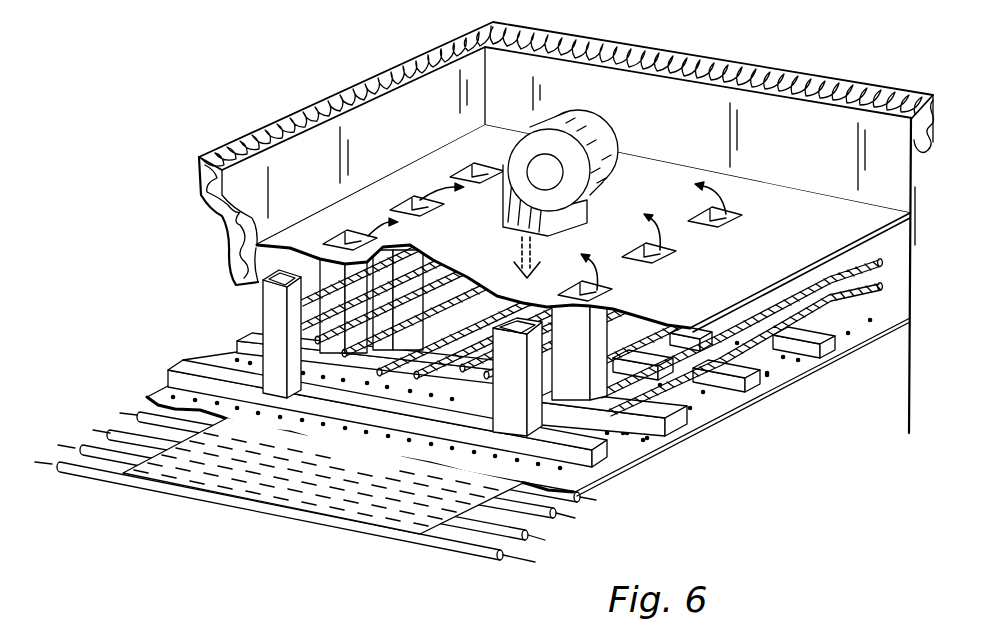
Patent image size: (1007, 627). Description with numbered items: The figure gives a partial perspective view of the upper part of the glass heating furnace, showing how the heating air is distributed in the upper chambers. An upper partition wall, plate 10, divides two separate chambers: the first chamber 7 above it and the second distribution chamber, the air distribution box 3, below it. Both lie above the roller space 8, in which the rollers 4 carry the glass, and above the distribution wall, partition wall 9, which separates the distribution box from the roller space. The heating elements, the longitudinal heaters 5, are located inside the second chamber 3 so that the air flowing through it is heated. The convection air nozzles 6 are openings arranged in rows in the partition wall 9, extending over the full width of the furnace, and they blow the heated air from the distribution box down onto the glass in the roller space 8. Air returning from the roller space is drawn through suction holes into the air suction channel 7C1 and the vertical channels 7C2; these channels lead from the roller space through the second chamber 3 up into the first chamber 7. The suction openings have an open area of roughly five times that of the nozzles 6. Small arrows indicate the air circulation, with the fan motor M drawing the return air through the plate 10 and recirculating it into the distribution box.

The air distribution box 3 is at (885, 318).
The rollers 4 is at (487, 557).
The longitudinal heaters 5 is at (767, 350).
The convection air nozzles 6 is at (233, 468).
The first chamber 7 is at (387, 137).
The air suction channel 7C1 is at (190, 368).
The vertical channel 7C2 is at (275, 330).
The roller space 8 is at (578, 512).
The partition wall 9 is at (647, 457).
The upper partition wall plate 10 is at (810, 237).
The motor / fan M is at (593, 143).